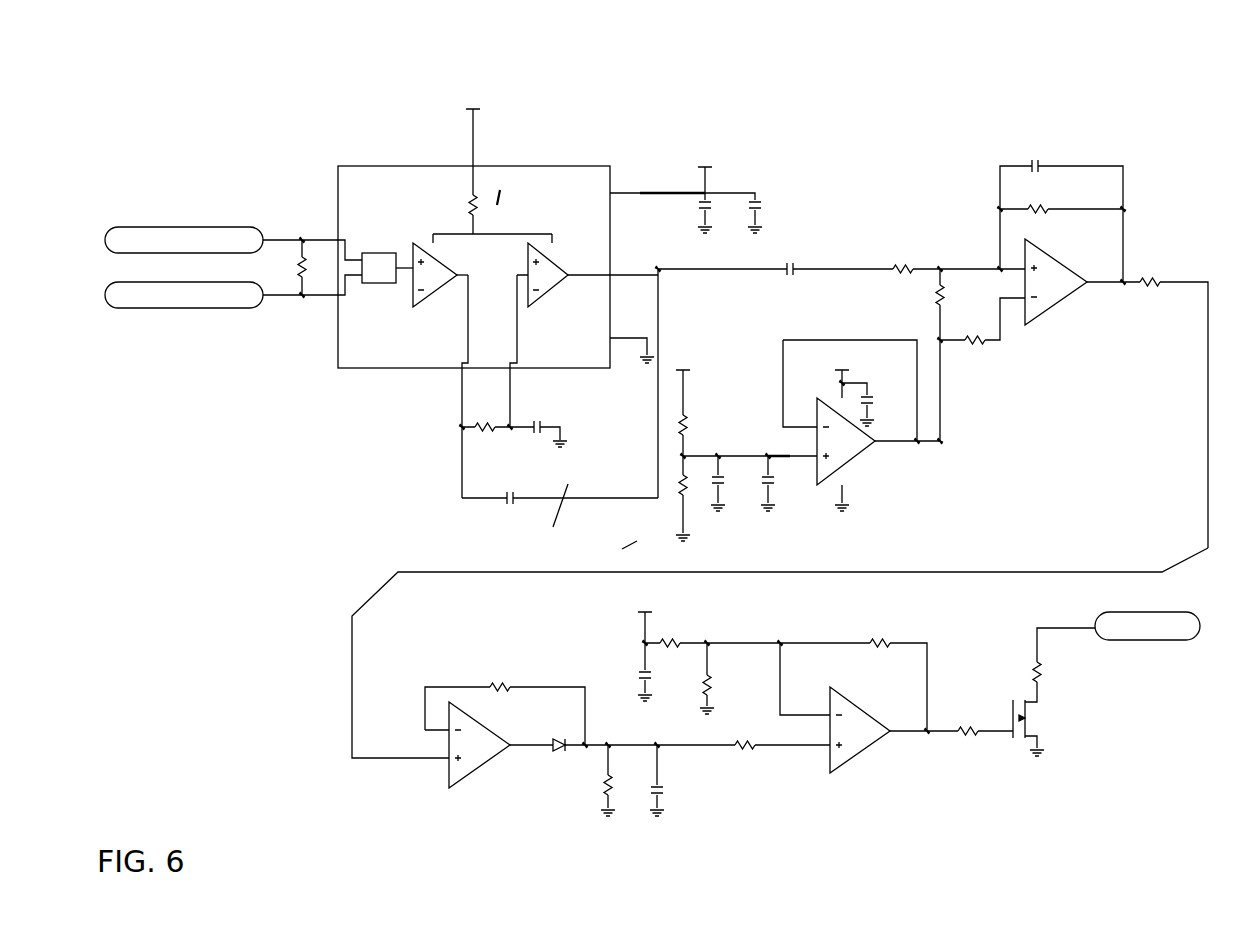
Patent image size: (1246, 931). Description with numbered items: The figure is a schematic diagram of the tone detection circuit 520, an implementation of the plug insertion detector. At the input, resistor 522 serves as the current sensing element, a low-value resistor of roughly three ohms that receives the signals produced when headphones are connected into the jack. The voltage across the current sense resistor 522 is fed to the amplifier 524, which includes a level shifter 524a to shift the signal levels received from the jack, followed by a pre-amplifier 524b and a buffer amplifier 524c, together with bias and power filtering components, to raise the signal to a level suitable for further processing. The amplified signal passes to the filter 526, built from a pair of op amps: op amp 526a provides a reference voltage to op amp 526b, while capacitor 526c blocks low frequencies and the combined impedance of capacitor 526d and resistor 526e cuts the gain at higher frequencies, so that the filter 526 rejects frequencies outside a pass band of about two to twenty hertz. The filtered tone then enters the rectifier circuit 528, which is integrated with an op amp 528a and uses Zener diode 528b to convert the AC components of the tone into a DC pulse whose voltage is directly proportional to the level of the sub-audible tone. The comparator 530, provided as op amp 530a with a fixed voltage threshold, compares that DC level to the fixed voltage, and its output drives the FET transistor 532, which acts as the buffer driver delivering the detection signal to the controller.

The tone detection circuit 520 is at (335, 72).
The resistor 522 is at (297, 277).
The amplifier 524 is at (506, 299).
The level shifter 524a is at (376, 250).
The pre-amplifier 524b is at (413, 290).
The buffer amplifier 524c is at (560, 263).
The filter 526 is at (933, 305).
The op amp 526a is at (858, 434).
The op amp 526b is at (1112, 393).
The capacitor 526c is at (841, 241).
The capacitor 526d is at (1044, 151).
The resistor 526e is at (1061, 195).
The rectifier circuit 528 is at (456, 723).
The op amp 528a is at (468, 667).
The Zener diode 528b is at (552, 757).
The comparator 530 is at (798, 732).
The op amp 530a is at (876, 732).
The FET transistor 532 is at (1074, 684).